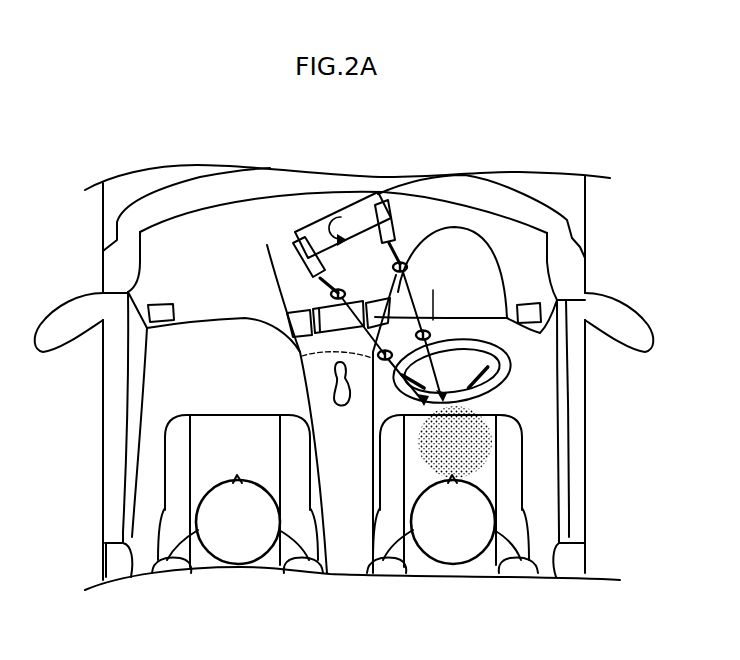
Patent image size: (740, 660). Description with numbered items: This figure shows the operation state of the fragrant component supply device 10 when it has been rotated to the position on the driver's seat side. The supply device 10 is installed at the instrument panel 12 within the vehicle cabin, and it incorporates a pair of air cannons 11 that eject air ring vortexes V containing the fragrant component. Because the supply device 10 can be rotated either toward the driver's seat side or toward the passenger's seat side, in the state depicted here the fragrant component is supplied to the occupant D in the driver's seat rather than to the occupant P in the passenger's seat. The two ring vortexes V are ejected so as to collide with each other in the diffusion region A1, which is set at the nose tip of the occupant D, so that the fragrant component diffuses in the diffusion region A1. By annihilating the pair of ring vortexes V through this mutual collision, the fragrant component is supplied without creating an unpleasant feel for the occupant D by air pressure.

The supply device 10 is at (329, 203).
The air cannons 11 is at (425, 180).
The instrument panel 12 is at (227, 222).
The air ring vortexes V is at (412, 264).
The diffusion region A1 is at (485, 411).
The occupant in passenger's seat P is at (242, 562).
The occupant in driver's seat D is at (459, 562).